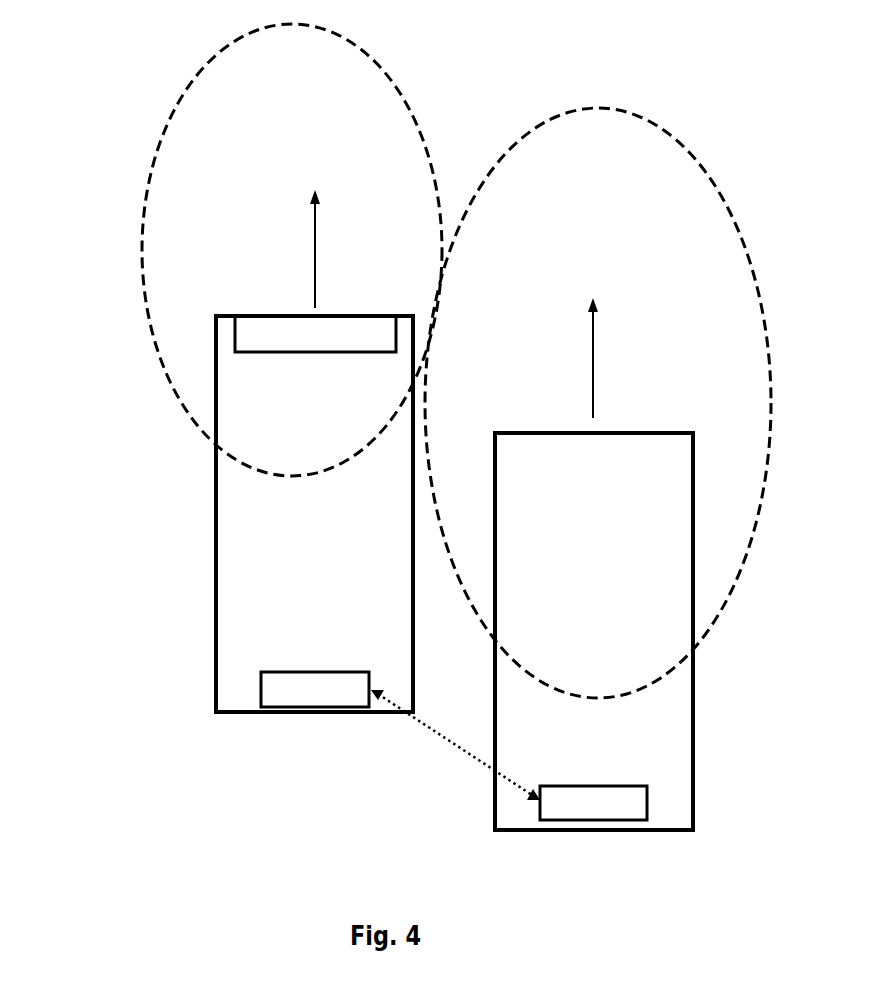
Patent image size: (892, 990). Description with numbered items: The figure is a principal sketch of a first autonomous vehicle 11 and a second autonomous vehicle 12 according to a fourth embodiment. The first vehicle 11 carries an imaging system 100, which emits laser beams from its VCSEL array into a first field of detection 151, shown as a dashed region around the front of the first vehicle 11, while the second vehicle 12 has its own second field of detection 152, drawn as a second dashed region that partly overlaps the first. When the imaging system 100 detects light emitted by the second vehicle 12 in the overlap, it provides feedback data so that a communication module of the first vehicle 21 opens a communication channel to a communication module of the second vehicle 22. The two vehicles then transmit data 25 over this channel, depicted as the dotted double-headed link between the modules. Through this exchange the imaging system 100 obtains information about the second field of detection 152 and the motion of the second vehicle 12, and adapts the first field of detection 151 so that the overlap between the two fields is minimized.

The first autonomous vehicle 11 is at (216, 568).
The second autonomous vehicle 12 is at (693, 718).
The imaging system 100 is at (258, 322).
The communication module of the first vehicle 21 is at (273, 712).
The communication module of the second vehicle 22 is at (568, 822).
The data 25 is at (443, 742).
The first field of detection 151 is at (160, 262).
The second field of detection 152 is at (735, 258).